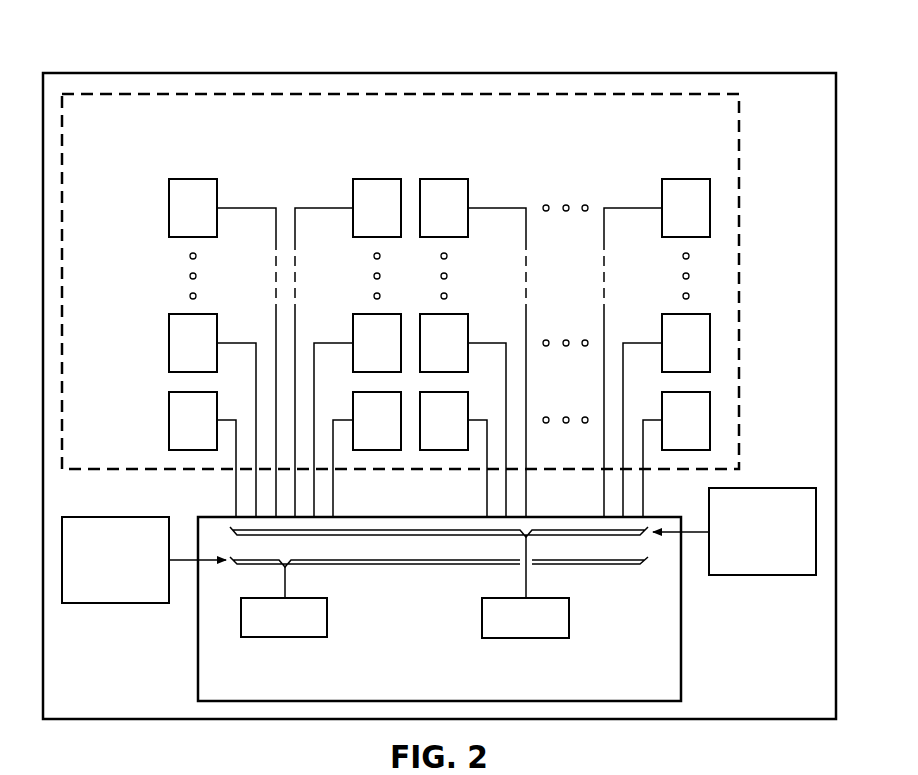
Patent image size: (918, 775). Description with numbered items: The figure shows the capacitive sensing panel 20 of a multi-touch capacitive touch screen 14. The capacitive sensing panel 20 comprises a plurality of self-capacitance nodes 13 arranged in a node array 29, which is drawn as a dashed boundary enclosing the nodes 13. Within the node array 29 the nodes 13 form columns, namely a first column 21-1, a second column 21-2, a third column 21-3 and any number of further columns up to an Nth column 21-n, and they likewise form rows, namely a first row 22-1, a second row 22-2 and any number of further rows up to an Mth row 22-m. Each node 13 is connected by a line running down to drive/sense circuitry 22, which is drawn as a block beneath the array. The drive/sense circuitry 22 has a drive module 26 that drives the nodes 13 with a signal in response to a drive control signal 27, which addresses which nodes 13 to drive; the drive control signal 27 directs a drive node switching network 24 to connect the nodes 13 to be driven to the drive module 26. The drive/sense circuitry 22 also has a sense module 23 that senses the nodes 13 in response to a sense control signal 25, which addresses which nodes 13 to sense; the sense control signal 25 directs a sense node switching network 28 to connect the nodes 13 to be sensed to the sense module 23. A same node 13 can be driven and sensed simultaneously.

The multi-touch capacitive touch screen 14 is at (576, 46).
The capacitive sensing panel 20 is at (278, 71).
The node array 29 is at (745, 279).
The self-capacitance node 13 is at (699, 433).
The first column 21-1 is at (188, 163).
The second column 21-2 is at (371, 163).
The third column 21-3 is at (448, 163).
The Nth column 21-n is at (690, 163).
The Mth row 22-m is at (156, 203).
The second row 22-2 is at (156, 339).
The first row 22-1 is at (156, 416).
The drive/sense circuitry 22 is at (196, 653).
The sense node switching network 28 is at (423, 538).
The drive node switching network 24 is at (386, 566).
The drive control signal 27 is at (118, 604).
The sense control signal 25 is at (763, 576).
The drive module 26 is at (275, 638).
The sense module 23 is at (537, 640).